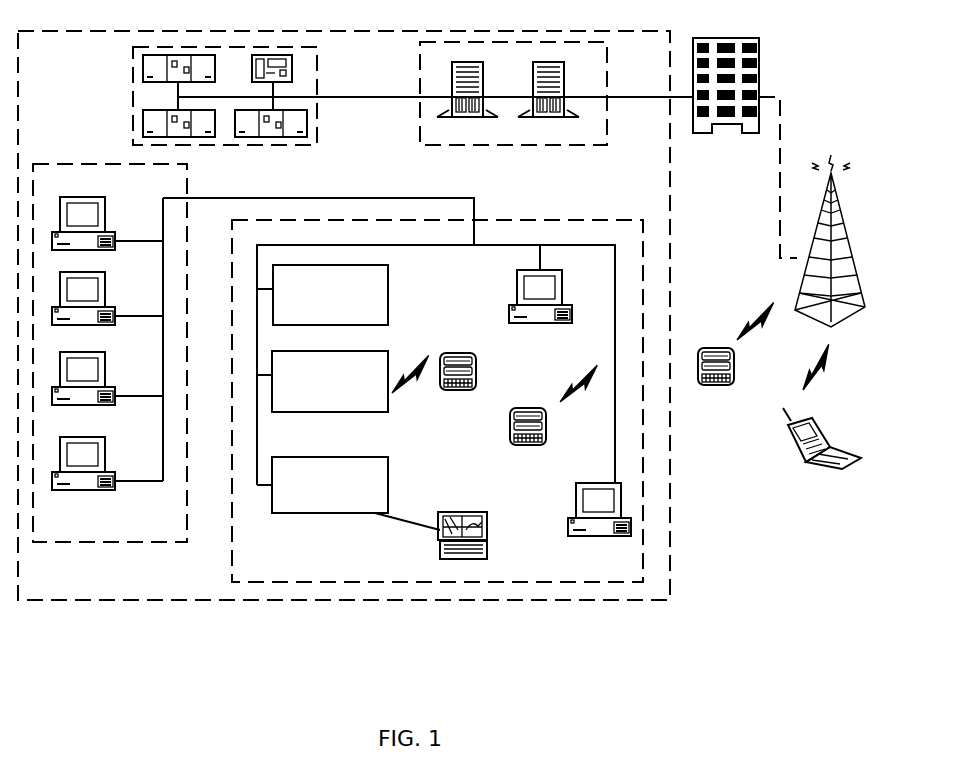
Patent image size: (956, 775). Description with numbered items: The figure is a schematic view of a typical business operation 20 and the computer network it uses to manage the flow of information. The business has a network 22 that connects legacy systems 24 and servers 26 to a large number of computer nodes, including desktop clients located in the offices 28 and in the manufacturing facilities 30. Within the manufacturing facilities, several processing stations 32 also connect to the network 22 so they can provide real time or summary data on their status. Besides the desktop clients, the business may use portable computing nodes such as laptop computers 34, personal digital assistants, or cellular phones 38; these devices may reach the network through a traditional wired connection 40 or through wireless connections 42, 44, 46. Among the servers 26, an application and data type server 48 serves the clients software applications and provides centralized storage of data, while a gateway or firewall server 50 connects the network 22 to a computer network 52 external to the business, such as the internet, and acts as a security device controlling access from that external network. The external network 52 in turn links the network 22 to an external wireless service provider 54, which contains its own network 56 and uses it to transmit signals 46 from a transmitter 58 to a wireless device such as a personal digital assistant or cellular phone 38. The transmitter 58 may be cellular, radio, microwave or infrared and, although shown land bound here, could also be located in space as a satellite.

The business operation 20 is at (125, 31).
The network 22 is at (340, 97).
The legacy systems 24 is at (395, 96).
The servers 26 is at (513, 107).
The offices 28 is at (253, 338).
The manufacturing facilities 30 is at (437, 383).
The processing stations 32 is at (388, 268).
The laptop computers 34 is at (487, 520).
The cellular phones 38 is at (810, 464).
The wired connection 40 is at (406, 525).
The wireless connection 42 is at (404, 374).
The wireless connection 44 is at (562, 398).
The wireless connection / signals 46 is at (746, 324).
The application and data type server 48 is at (462, 117).
The firewall server 50 is at (543, 117).
The external network 52 is at (682, 97).
The external wireless service provider 54 is at (743, 38).
The provider network 56 is at (783, 97).
The transmitter 58 is at (826, 327).